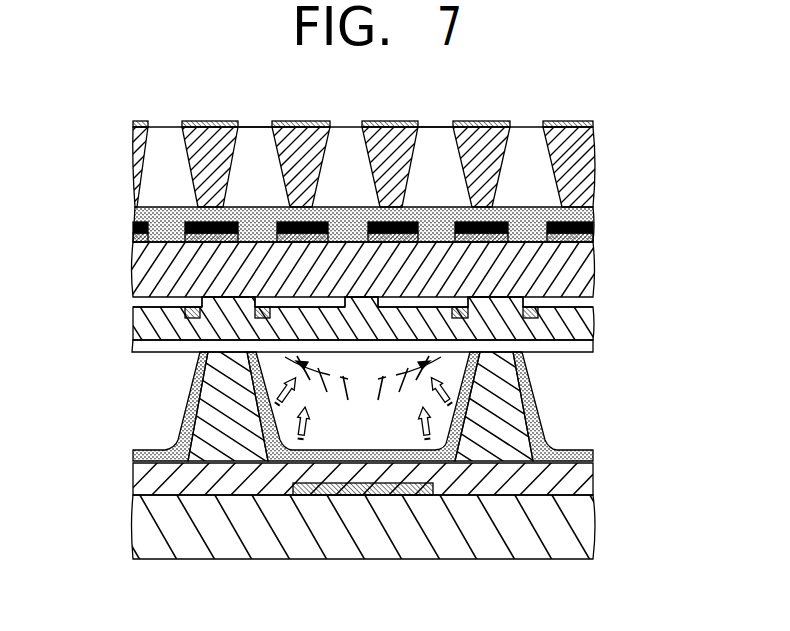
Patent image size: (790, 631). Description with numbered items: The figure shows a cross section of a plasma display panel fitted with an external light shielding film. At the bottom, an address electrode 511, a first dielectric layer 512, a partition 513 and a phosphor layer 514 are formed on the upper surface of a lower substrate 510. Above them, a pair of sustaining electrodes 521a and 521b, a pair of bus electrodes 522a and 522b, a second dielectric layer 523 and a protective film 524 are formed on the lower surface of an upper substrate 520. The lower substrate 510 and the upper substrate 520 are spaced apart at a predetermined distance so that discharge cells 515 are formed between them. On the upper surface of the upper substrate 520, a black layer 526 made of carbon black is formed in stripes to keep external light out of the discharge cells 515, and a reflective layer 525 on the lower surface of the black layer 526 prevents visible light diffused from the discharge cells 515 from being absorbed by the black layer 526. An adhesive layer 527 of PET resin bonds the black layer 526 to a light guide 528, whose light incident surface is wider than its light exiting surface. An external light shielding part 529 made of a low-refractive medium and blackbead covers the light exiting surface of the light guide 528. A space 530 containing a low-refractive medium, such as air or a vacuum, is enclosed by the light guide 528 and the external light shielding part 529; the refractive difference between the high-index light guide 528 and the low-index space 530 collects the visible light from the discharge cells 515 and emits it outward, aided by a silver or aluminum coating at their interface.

The lower substrate 510 is at (593, 540).
The address electrode 511 is at (300, 495).
The first dielectric layer 512 is at (593, 482).
The partition 513 is at (527, 437).
The phosphor layer 514 is at (515, 362).
The discharge cells 515 is at (363, 396).
The upper substrate 520 is at (578, 262).
The sustaining electrode 521a is at (250, 298).
The sustaining electrode 521b is at (202, 300).
The bus electrode 522a is at (262, 320).
The bus electrode 522b is at (185, 313).
The second dielectric layer 523 is at (590, 323).
The protective film 524 is at (593, 346).
The reflective layer 525 is at (138, 232).
The black layer 526 is at (165, 232).
The adhesive layer 527 is at (590, 207).
The light guide 528 is at (530, 135).
The external light shielding part 529 is at (565, 122).
The space 530 is at (585, 140).